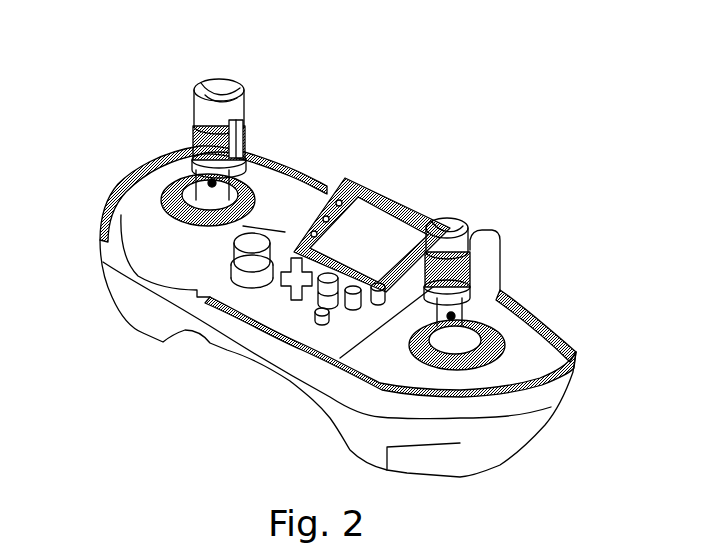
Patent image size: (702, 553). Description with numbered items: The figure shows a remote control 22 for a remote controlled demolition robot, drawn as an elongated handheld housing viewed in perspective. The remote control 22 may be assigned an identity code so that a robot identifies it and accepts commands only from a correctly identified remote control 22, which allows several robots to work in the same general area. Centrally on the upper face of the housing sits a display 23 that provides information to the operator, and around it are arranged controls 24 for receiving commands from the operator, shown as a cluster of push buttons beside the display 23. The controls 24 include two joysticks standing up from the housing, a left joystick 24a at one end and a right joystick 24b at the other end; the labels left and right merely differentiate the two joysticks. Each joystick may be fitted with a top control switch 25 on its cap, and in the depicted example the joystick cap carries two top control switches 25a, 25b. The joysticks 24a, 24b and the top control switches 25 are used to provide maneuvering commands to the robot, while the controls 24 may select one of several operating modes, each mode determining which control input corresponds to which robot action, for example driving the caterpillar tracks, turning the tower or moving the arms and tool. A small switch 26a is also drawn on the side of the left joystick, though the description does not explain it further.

The remote control 22 is at (128, 371).
The display 23 is at (369, 228).
The controls 24 is at (318, 320).
The left joystick 24a is at (189, 152).
The right joystick 24b is at (473, 288).
The top control switch 25 is at (461, 222).
The top control switch 25a is at (196, 82).
The top control switch 25b is at (236, 81).
The toggle switch 26a is at (241, 128).